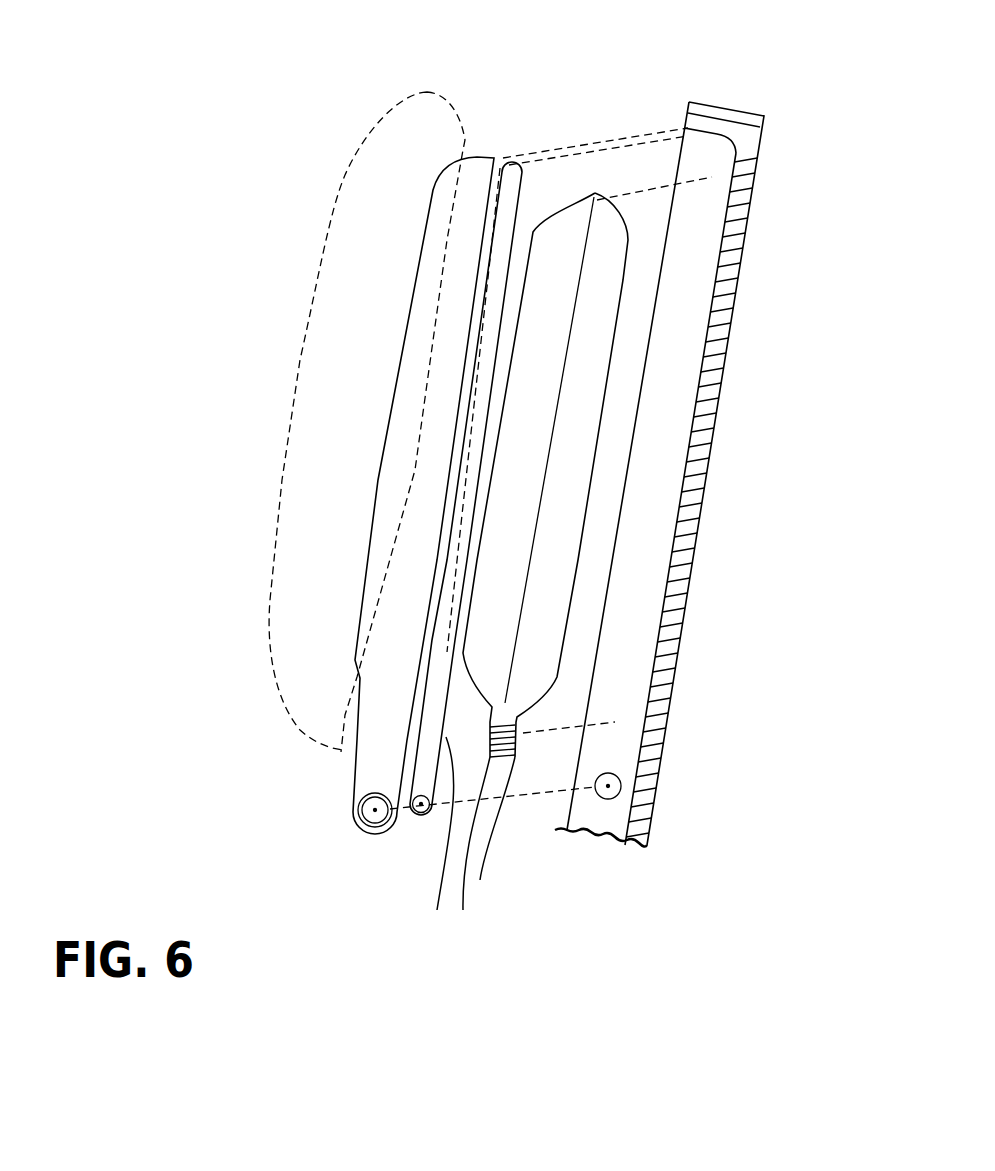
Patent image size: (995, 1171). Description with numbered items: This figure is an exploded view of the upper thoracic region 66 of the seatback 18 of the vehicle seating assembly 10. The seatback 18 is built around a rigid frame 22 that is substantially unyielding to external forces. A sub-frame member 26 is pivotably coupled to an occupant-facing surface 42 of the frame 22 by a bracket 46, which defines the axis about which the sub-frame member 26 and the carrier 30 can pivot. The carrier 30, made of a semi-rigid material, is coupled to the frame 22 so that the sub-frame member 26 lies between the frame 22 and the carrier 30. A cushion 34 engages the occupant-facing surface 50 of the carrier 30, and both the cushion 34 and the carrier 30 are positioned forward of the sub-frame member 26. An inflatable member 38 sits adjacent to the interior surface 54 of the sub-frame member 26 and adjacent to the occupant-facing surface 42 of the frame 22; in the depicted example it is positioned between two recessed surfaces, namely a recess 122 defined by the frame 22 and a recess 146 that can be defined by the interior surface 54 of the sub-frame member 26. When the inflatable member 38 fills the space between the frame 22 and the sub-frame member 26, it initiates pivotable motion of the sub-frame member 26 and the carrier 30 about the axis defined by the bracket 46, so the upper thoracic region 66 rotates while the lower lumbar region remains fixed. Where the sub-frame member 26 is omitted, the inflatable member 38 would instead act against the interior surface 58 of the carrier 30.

The vehicle seating assembly 10 is at (255, 125).
The seatback 18 is at (722, 96).
The frame 22 is at (675, 645).
The sub-frame member 26 is at (420, 815).
The carrier 30 is at (477, 145).
The cushion 34 is at (290, 384).
The inflatable member 38 is at (565, 470).
The occupant-facing surface 42 is at (565, 803).
The bracket 46 is at (610, 796).
The occupant-facing surface 50 is at (353, 784).
The interior surface 54 is at (444, 818).
The interior surface 58 is at (497, 192).
The upper thoracic region 66 is at (717, 413).
The recess 122 is at (675, 337).
The recess 146 is at (510, 228).